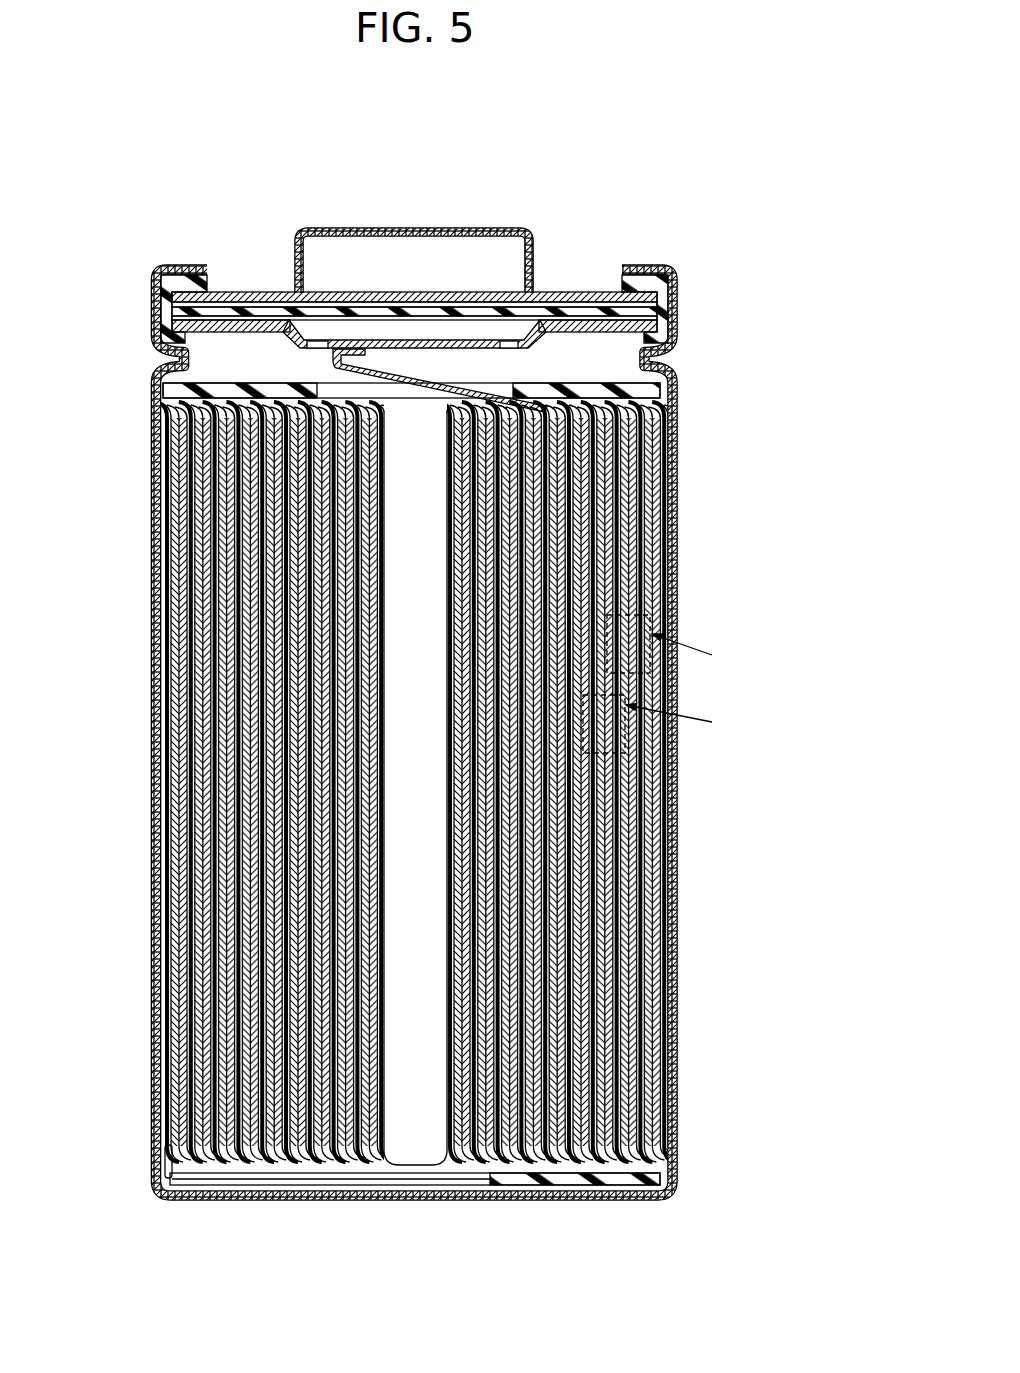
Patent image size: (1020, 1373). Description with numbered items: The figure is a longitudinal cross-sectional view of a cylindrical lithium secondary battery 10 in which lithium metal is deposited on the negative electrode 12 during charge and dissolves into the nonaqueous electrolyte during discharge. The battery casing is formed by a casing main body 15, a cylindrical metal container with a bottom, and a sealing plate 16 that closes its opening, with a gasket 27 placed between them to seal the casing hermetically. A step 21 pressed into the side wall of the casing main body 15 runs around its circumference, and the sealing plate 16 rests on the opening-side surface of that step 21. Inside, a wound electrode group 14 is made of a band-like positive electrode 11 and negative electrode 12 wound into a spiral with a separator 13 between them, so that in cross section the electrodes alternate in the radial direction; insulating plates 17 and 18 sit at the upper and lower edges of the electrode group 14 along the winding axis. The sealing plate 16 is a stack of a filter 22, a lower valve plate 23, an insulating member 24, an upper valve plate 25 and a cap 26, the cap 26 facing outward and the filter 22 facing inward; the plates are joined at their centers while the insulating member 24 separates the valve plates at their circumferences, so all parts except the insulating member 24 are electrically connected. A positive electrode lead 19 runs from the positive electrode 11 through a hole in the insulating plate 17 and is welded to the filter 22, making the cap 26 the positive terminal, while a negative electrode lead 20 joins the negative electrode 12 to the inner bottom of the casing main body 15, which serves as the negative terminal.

The lithium secondary battery 10 is at (657, 122).
The positive electrode 11 is at (620, 900).
The negative electrode 12 is at (652, 918).
The separator 13 is at (640, 965).
The electrode group 14 is at (757, 872).
The casing main body 15 is at (680, 258).
The sealing plate 16 is at (530, 214).
The insulating plate 17 is at (660, 392).
The insulating plate 18 is at (662, 1180).
The positive electrode lead 19 is at (333, 366).
The negative electrode lead 20 is at (167, 1150).
The step 21 is at (183, 385).
The filter 22 is at (424, 340).
The lower valve plate 23 is at (322, 320).
The insulating member 24 is at (228, 300).
The upper valve plate 25 is at (347, 313).
The cap 26 is at (484, 232).
The gasket 27 is at (661, 302).